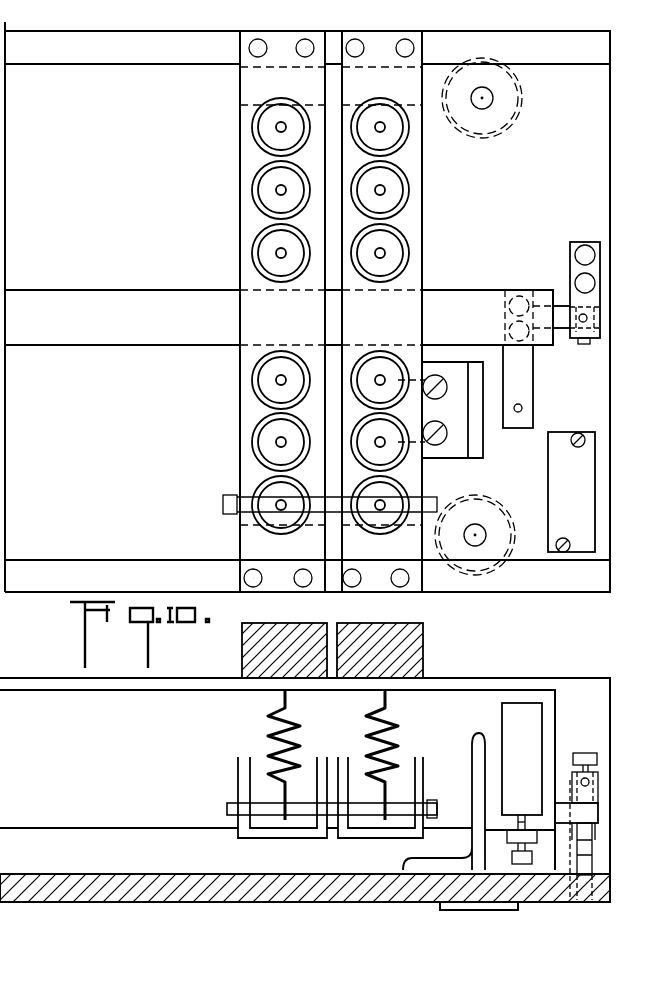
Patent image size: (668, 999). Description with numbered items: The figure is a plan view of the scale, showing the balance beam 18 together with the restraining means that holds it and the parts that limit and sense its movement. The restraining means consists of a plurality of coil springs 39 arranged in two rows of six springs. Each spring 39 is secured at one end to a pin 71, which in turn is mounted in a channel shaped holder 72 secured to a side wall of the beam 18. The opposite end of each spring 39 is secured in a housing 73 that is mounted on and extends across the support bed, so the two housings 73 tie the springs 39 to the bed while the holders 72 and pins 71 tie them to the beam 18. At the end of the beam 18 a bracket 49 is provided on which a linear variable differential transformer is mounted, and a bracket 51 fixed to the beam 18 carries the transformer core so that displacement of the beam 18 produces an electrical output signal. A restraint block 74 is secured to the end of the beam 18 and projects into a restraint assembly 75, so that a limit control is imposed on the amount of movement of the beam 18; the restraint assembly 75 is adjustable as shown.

The balance beam 18 is at (93, 300).
The coil springs 39 is at (262, 178).
The bracket 49 is at (485, 457).
The bracket 51 is at (528, 395).
The pin 71 is at (445, 494).
The channel shaped holder 72 is at (238, 766).
The housing 73 is at (424, 257).
The restraint block 74 is at (563, 327).
The restraint assembly 75 is at (566, 262).